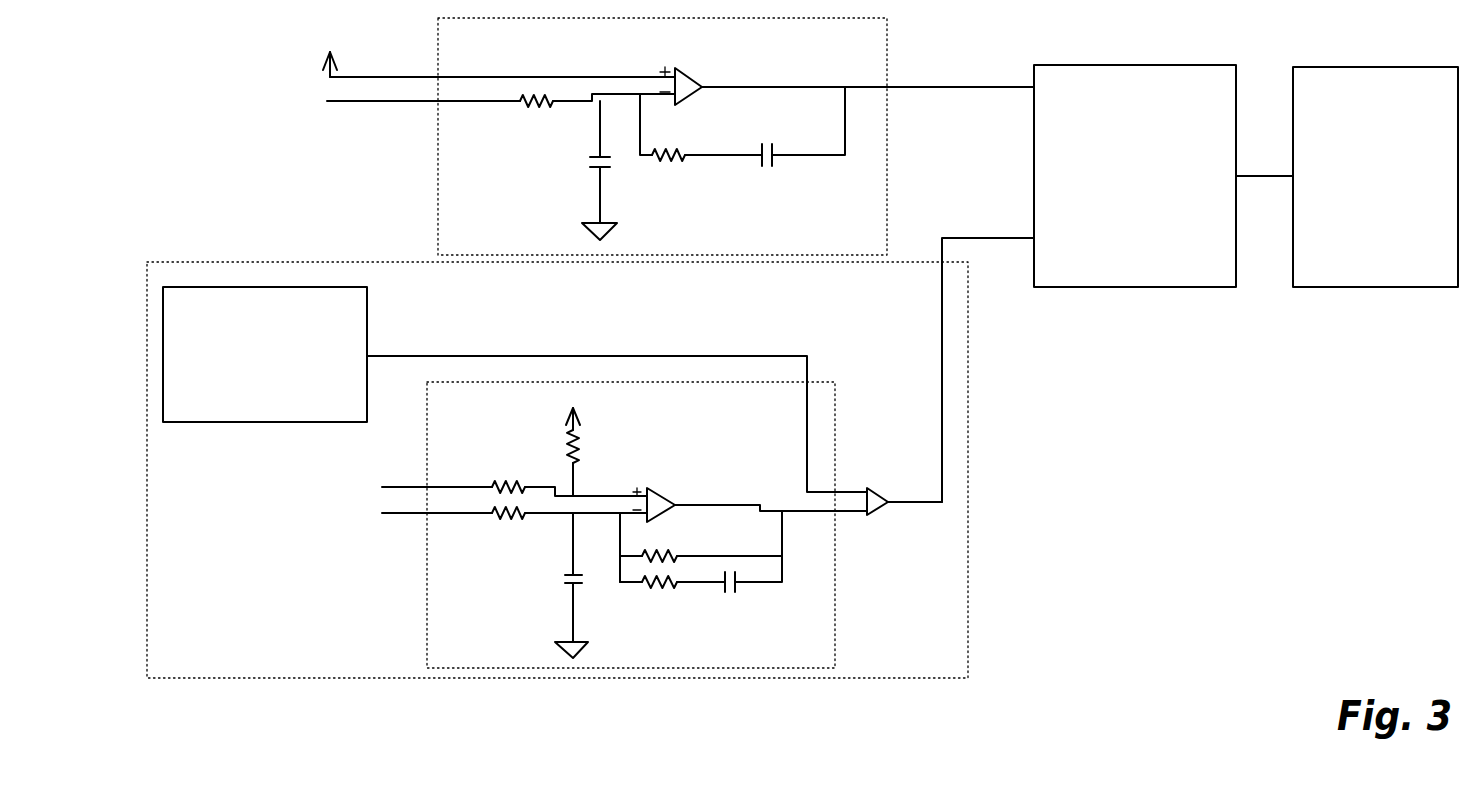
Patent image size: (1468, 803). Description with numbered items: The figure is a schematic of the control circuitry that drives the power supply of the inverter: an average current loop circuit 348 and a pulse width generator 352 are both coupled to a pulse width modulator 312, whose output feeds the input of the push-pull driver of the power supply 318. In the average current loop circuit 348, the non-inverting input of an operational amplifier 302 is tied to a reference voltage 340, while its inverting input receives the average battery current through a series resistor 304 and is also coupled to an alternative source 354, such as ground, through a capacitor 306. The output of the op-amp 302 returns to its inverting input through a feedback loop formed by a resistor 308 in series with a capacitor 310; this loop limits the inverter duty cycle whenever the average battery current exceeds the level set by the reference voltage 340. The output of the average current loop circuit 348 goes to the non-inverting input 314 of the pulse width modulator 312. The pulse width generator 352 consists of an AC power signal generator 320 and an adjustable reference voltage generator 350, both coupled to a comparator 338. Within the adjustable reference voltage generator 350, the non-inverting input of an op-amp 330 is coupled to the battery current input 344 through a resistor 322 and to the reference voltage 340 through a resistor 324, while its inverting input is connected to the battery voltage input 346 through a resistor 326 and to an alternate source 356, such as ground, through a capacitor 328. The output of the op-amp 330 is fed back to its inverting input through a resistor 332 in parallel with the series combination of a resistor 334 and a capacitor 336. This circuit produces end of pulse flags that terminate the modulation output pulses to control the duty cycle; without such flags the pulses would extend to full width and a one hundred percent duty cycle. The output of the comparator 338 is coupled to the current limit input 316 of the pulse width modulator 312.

The operational amplifier 302 is at (847, 77).
The resistor 304 is at (567, 92).
The capacitor 306 is at (569, 162).
The resistor 308 is at (701, 127).
The capacitor 310 is at (803, 126).
The pulse width modulator 312 is at (1163, 165).
The non-inverting input 314 is at (967, 78).
The current limit input 316 is at (988, 360).
The push-pull driver of the power supply 318 is at (1375, 165).
The AC power signal generator 320 is at (515, 378).
The resistor 322 is at (545, 478).
The resistor 324 is at (604, 460).
The resistor 326 is at (545, 504).
The capacitor 328 is at (542, 577).
The operational amplifier 330 is at (750, 495).
The resistor 332 is at (701, 547).
The resistor 334 is at (656, 595).
The capacitor 336 is at (727, 564).
The comparator 338 is at (904, 491).
The reference voltage 340 is at (499, 231).
The battery current input 344 is at (407, 472).
The battery voltage input 346 is at (406, 525).
The average current loop circuit 348 is at (524, 127).
The adjustable reference voltage generator 350 is at (656, 513).
The pulse width generator 352 is at (557, 459).
The alternative source 354 is at (629, 220).
The alternate source 356 is at (539, 640).